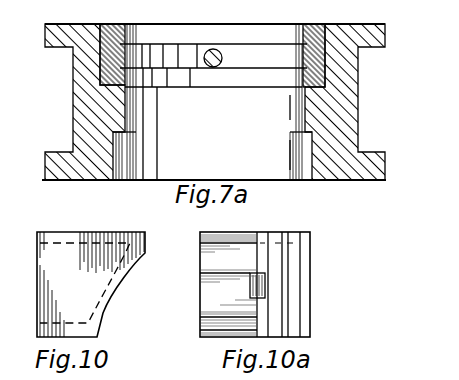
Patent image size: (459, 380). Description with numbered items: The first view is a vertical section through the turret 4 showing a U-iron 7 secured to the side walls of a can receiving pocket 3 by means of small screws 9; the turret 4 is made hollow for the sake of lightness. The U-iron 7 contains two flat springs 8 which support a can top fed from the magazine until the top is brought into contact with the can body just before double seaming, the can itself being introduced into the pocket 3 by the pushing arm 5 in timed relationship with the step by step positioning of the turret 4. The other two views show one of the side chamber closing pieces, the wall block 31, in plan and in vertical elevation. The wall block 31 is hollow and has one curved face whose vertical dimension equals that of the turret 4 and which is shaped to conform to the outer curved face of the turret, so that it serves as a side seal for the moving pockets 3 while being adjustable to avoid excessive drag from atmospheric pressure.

In FIG. 7A, the can receiving pocket 3 is at (210, 148).
In FIG. 7A, the turret 4 is at (48, 30).
In FIG. 7A, the pushing arm 5 is at (210, 61).
In FIG. 7A, the U-iron 7 is at (298, 80).
In FIG. 7A, the flat spring 8 is at (118, 39).
In FIG. 7A, the small screw 9 is at (218, 66).
In FIG. 10, the wall block 31 is at (99, 288).
In FIG. 10A, the wall block 31 is at (290, 278).